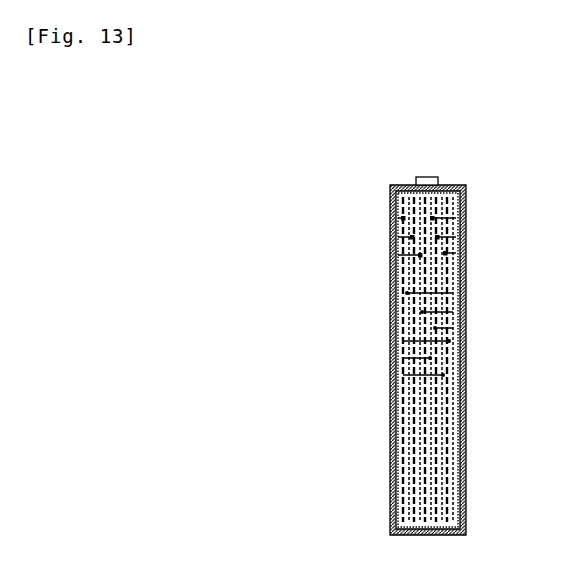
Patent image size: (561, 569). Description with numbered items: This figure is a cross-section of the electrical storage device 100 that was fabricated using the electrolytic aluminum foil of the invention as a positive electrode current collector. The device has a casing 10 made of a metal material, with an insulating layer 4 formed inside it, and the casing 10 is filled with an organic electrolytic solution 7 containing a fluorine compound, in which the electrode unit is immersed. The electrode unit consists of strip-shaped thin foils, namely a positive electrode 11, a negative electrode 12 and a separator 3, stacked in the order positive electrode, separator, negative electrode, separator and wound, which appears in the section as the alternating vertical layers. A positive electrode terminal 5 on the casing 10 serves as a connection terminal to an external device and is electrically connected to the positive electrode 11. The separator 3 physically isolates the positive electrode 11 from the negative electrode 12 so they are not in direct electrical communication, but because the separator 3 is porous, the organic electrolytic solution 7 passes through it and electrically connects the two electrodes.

The electrical storage device 100 is at (443, 157).
The casing 10 is at (465, 492).
The insulating layer 4 is at (467, 450).
The organic electrolytic solution 7 is at (463, 408).
The positive electrode terminal 5 is at (437, 181).
The positive electrode 11 is at (392, 358).
The negative electrode 12 is at (462, 335).
The separator 3 is at (391, 256).